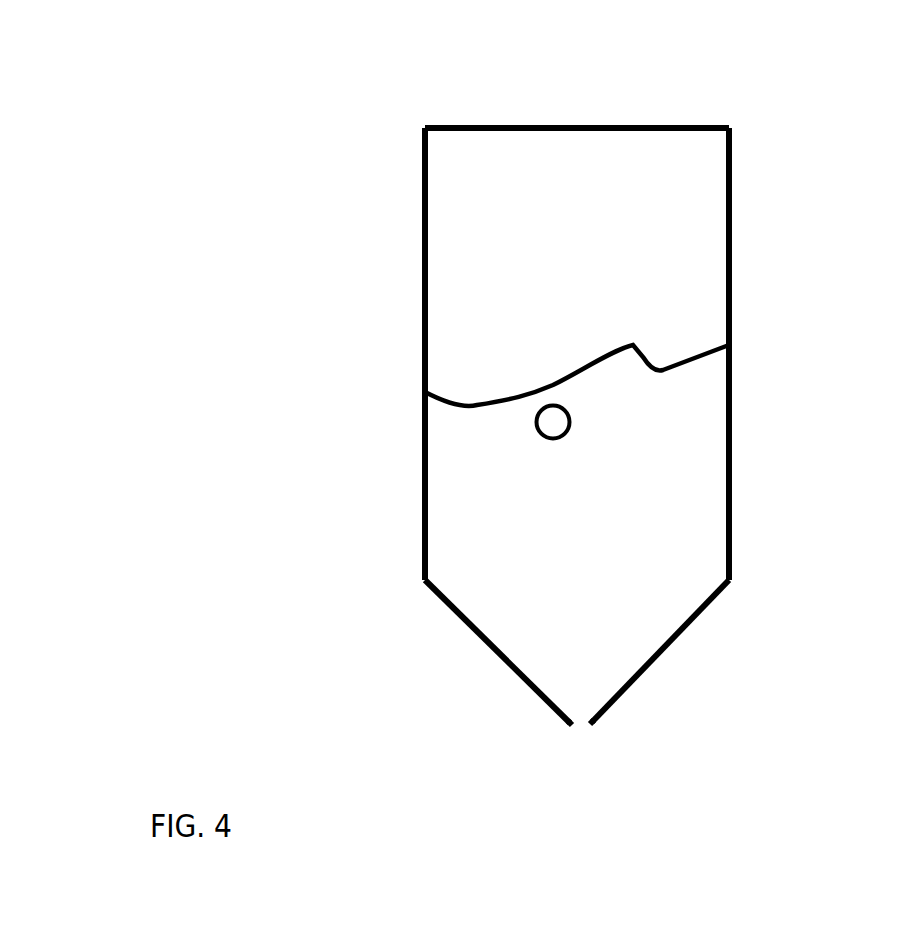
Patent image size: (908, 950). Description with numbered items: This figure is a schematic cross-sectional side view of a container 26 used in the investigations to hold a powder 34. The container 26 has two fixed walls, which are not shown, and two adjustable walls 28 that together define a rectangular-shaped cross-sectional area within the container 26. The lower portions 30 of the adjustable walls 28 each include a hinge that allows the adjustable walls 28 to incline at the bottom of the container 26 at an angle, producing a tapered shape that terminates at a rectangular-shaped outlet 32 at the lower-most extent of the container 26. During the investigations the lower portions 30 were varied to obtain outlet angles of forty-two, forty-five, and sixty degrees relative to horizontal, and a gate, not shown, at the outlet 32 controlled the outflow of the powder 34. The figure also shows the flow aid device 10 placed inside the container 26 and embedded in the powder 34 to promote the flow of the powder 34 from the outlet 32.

The container 26 is at (562, 421).
The adjustable walls 28 is at (425, 367).
The lower portions 30 is at (463, 620).
The outlet 32 is at (585, 722).
The powder 34 is at (702, 470).
The flow aid device 10 is at (545, 425).